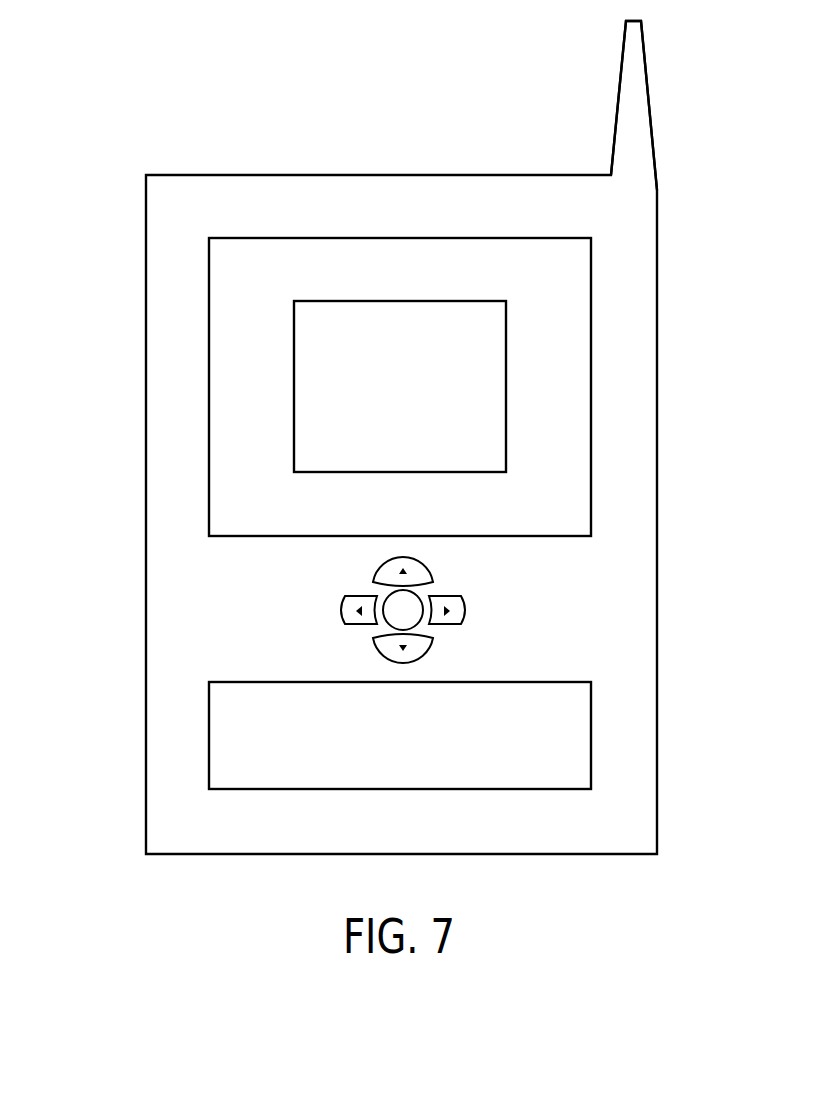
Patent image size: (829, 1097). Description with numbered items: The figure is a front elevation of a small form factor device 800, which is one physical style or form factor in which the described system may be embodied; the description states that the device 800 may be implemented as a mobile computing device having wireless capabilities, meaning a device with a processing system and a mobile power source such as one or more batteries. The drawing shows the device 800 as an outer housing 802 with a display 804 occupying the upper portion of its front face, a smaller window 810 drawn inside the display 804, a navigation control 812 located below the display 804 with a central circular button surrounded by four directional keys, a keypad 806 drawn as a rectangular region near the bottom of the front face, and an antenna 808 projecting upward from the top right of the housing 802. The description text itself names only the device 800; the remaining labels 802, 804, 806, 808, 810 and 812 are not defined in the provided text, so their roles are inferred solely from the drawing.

The small form factor device 800 is at (145, 115).
The housing 802 is at (146, 600).
The display 804 is at (592, 291).
The keypad 806 is at (592, 733).
The antenna 808 is at (619, 97).
The display window 810 is at (400, 301).
The navigation control 812 is at (502, 612).